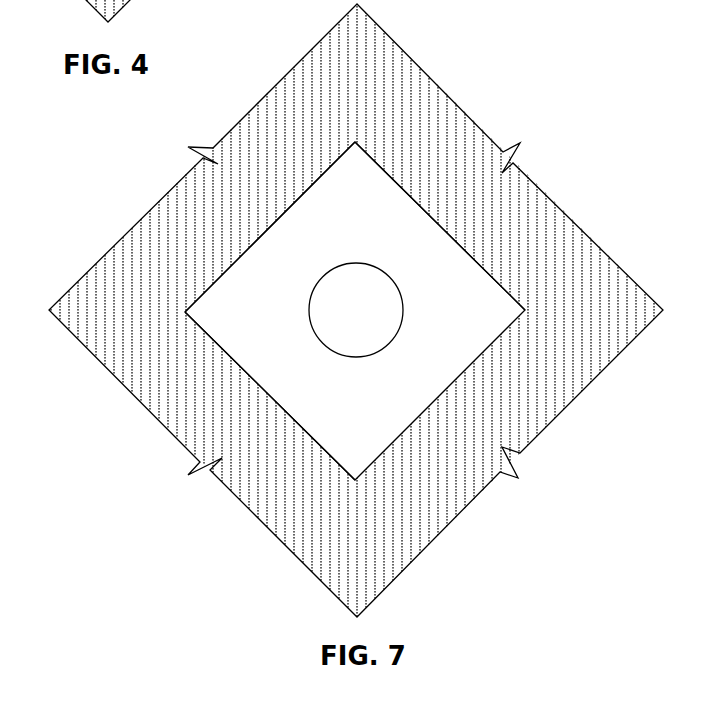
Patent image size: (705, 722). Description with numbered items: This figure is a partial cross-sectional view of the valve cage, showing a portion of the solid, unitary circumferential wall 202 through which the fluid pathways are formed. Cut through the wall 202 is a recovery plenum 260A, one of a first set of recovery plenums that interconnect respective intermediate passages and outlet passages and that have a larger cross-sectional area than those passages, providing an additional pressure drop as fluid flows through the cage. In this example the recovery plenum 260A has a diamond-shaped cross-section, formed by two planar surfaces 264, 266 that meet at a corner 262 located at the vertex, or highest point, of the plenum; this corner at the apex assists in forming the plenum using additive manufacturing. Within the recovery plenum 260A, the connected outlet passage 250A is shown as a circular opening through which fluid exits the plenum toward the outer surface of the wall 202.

The circumferential wall 202 is at (241, 121).
The corner 262 is at (355, 135).
The planar surface 264 is at (216, 291).
The planar surface 266 is at (428, 224).
The recovery plenum 260A is at (210, 346).
The outlet passage 250A is at (405, 335).